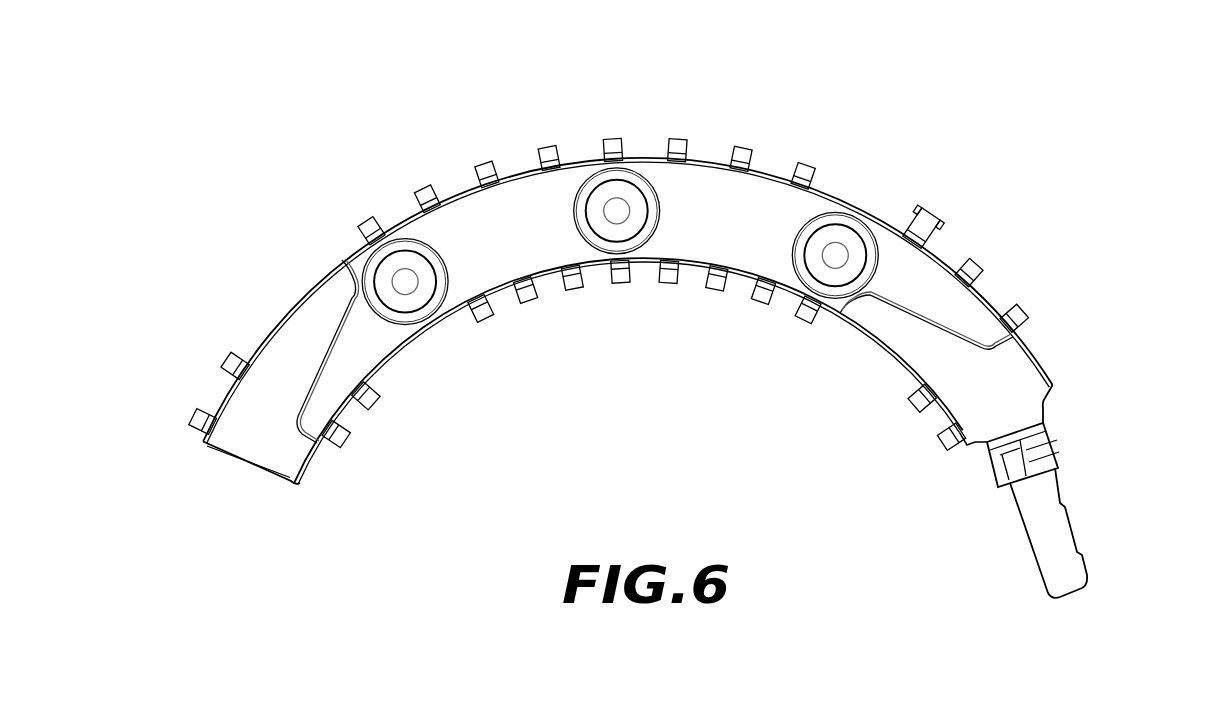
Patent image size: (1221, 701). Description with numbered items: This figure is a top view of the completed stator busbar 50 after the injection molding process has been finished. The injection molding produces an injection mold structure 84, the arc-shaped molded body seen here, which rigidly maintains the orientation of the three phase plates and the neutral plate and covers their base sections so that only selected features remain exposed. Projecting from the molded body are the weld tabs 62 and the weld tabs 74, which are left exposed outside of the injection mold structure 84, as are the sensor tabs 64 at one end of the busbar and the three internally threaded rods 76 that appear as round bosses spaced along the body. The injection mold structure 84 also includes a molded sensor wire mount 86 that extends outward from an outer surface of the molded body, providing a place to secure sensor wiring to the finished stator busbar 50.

The stator busbar 50 is at (899, 119).
The weld tabs 62 is at (617, 283).
The sensor tabs 64 is at (1055, 542).
The weld tabs 74 is at (483, 320).
The internally threaded rods 76 is at (607, 192).
The injection mold structure 84 is at (700, 187).
The molded sensor wire mount 86 is at (925, 212).